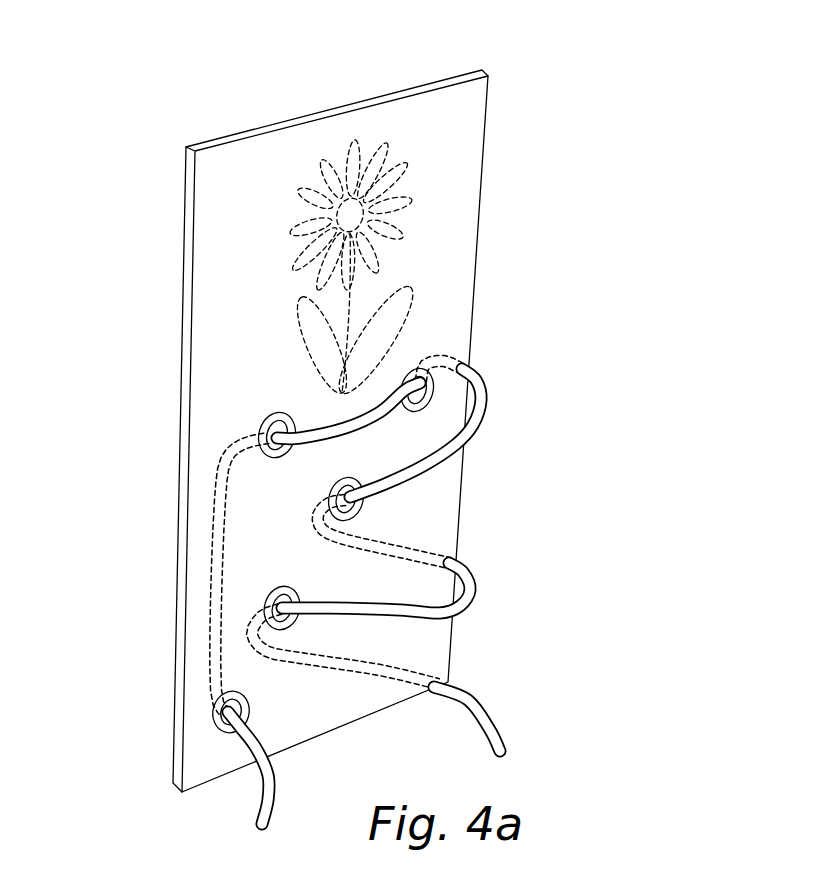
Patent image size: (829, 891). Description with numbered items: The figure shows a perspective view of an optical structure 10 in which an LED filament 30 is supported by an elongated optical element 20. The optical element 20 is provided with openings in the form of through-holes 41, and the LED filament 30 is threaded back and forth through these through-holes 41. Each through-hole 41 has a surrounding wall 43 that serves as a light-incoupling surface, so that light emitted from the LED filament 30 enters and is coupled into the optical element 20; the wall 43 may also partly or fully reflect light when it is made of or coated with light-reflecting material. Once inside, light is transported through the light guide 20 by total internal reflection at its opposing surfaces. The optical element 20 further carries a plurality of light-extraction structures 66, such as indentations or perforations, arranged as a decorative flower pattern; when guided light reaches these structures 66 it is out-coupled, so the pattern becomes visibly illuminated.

The optical structure 10 is at (163, 107).
The elongated optical element 20 is at (398, 117).
The LED filament 30 is at (468, 587).
The through-hole 41 is at (260, 422).
The surrounding wall 43 is at (295, 430).
The light-extraction structure 66 is at (323, 157).